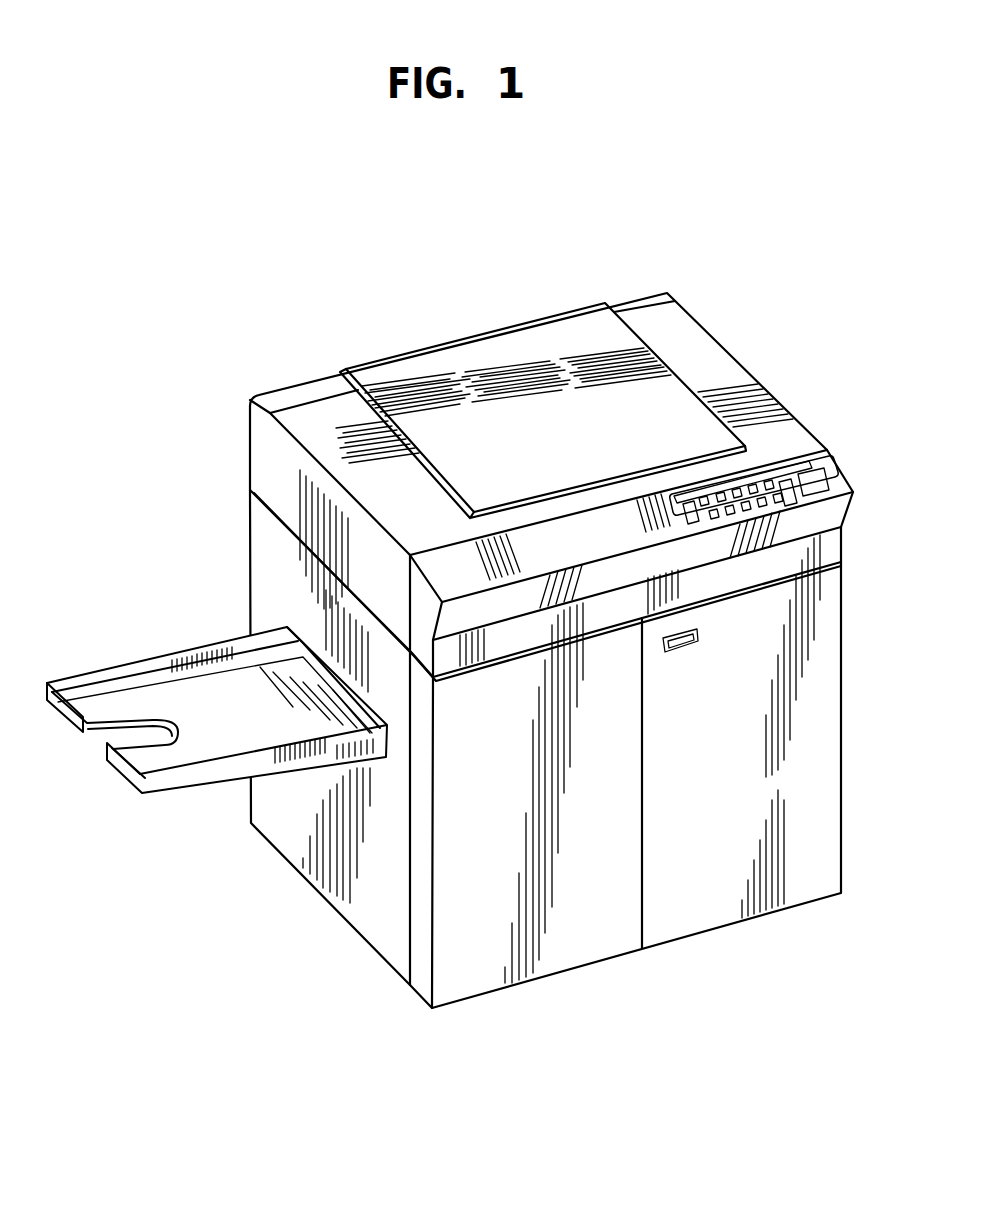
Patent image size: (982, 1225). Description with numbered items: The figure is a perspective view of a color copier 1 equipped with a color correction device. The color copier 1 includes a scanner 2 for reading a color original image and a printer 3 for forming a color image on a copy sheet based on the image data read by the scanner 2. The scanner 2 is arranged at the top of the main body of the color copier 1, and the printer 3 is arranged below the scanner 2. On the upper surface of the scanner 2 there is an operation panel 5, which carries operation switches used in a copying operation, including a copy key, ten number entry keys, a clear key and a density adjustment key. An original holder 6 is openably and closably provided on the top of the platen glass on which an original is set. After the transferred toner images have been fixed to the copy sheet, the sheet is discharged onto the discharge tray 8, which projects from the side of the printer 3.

The color copier 1 is at (706, 263).
The scanner 2 is at (750, 405).
The printer 3 is at (844, 627).
The operation panel 5 is at (826, 472).
The original holder 6 is at (683, 385).
The discharge tray 8 is at (155, 657).